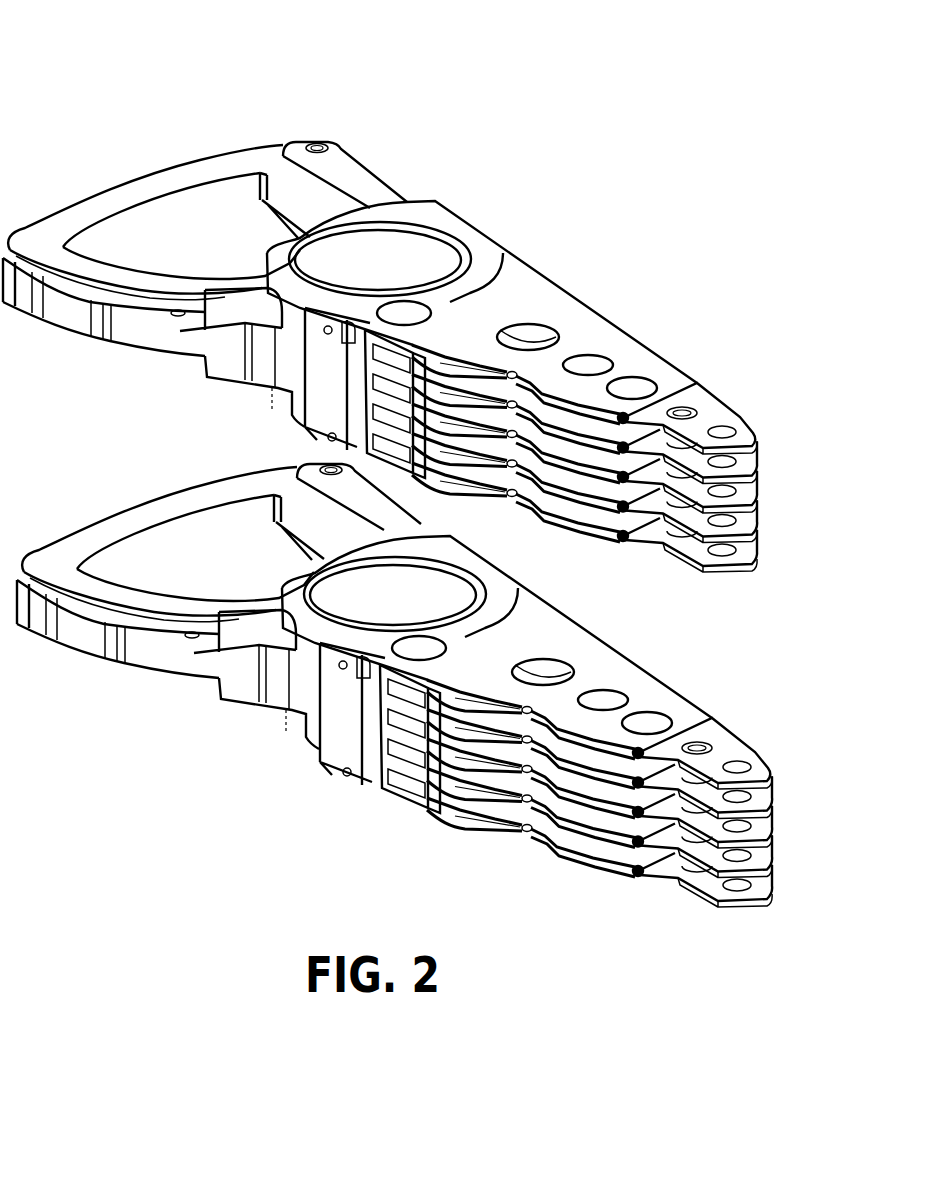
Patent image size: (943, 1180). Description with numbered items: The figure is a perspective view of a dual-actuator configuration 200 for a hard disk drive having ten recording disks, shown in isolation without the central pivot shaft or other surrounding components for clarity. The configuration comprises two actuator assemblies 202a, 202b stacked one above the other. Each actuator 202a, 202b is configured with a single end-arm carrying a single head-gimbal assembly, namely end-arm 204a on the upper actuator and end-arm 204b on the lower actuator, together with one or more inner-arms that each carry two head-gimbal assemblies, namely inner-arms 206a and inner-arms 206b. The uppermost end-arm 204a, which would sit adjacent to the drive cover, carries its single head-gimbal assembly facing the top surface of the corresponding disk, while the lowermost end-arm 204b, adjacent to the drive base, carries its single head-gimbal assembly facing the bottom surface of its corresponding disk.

The dual-actuator configuration 200 is at (146, 78).
The actuator assembly 202a is at (466, 232).
The actuator assembly 202b is at (341, 773).
The end-arm 204a is at (700, 402).
The end-arm 204b is at (688, 878).
The inner-arms 206a is at (768, 447).
The inner-arms 206b is at (778, 753).